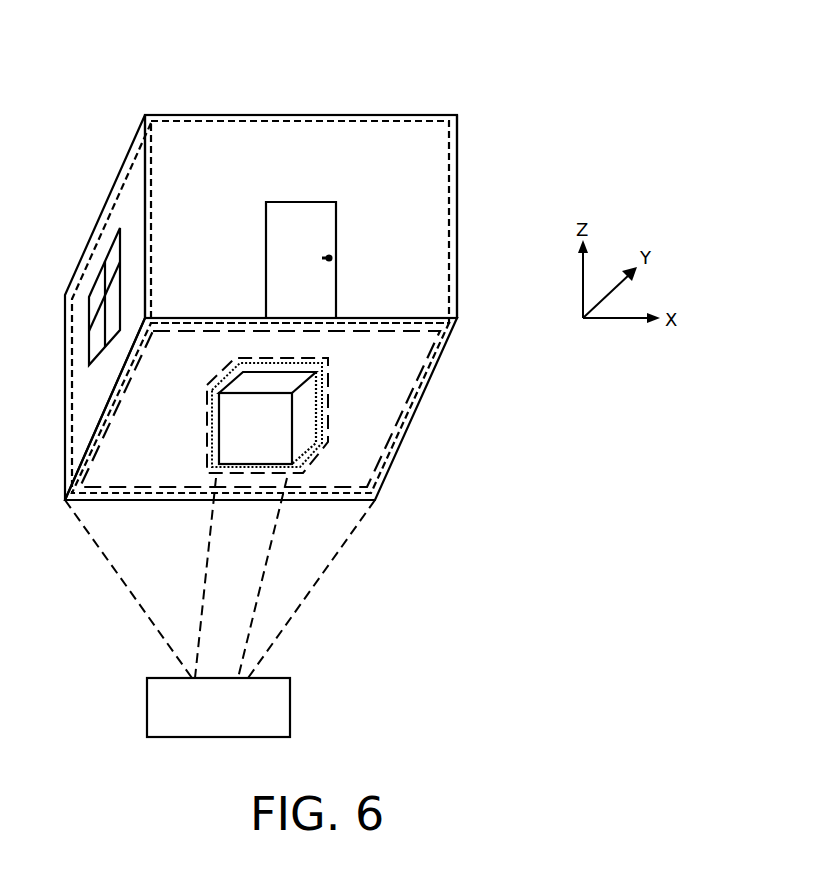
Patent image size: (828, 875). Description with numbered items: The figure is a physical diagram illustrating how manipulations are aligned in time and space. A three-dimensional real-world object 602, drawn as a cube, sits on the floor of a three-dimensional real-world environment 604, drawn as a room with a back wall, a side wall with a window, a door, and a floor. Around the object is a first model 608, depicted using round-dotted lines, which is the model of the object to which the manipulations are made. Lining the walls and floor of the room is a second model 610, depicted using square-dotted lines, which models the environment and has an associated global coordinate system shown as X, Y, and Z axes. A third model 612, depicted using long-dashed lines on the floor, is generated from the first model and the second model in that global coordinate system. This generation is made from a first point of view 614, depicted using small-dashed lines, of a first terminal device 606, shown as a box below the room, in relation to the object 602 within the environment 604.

The three-dimensional real-world object 602 is at (355, 441).
The three-dimensional real-world environment 604 is at (280, 254).
The first terminal device 606 is at (218, 707).
The first model 608 is at (353, 415).
The second model 610 is at (538, 255).
The third model 612 is at (339, 409).
The first point of view 614 is at (264, 595).